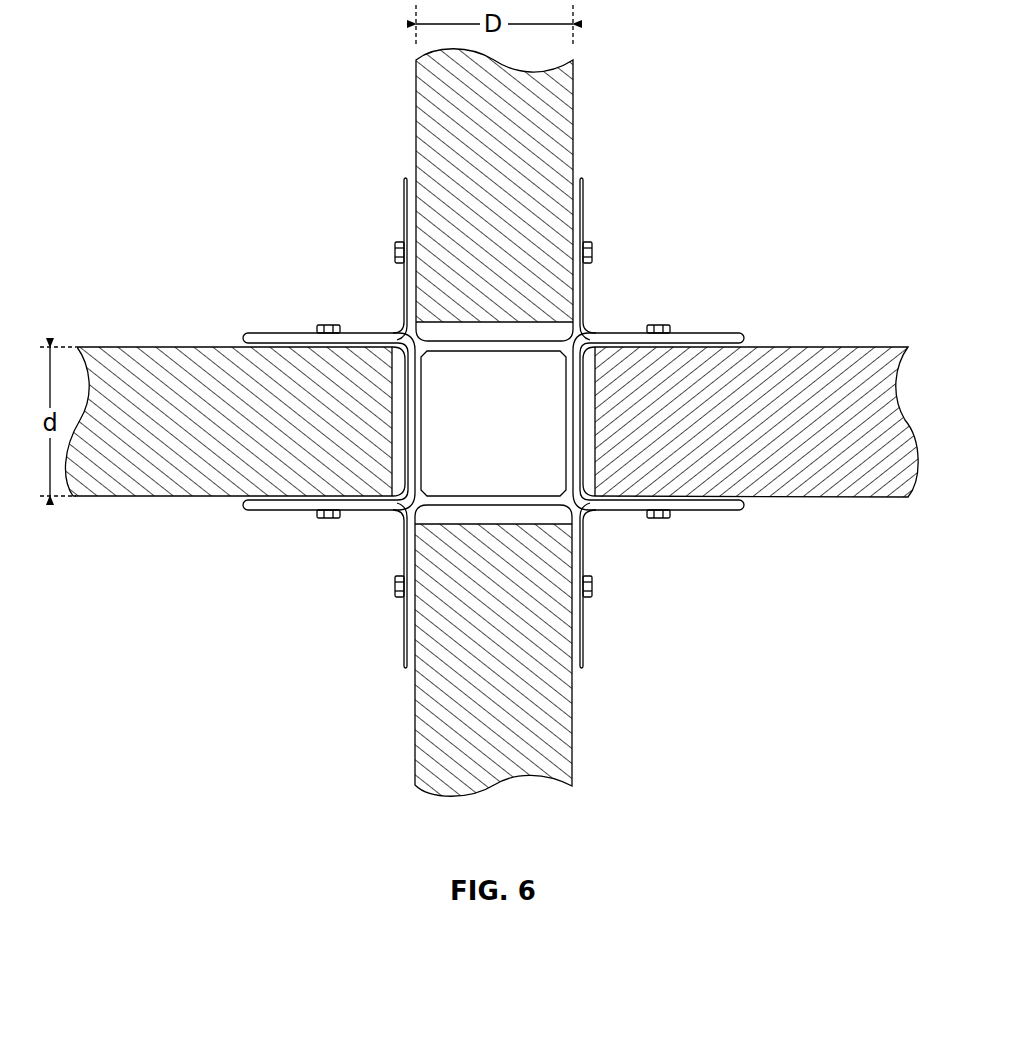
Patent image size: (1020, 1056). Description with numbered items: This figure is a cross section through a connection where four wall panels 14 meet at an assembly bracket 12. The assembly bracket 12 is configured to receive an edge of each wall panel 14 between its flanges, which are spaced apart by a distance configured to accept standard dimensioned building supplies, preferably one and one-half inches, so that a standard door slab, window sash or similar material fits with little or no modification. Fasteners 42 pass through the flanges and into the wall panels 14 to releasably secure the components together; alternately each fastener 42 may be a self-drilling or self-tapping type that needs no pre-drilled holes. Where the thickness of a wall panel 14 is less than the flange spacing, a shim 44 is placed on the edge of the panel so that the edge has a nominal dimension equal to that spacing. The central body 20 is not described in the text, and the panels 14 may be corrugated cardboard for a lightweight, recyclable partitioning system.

The assembly bracket 12 is at (599, 533).
The wall panel 14 is at (575, 100).
The node 20 is at (493, 423).
The fastener 42 is at (396, 250).
The shim 44 is at (232, 345).